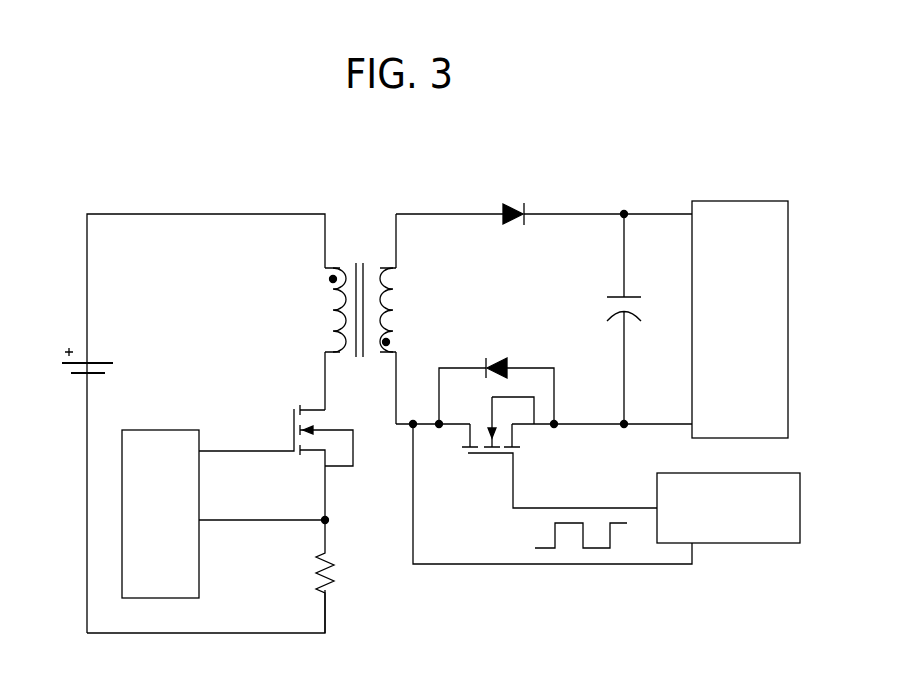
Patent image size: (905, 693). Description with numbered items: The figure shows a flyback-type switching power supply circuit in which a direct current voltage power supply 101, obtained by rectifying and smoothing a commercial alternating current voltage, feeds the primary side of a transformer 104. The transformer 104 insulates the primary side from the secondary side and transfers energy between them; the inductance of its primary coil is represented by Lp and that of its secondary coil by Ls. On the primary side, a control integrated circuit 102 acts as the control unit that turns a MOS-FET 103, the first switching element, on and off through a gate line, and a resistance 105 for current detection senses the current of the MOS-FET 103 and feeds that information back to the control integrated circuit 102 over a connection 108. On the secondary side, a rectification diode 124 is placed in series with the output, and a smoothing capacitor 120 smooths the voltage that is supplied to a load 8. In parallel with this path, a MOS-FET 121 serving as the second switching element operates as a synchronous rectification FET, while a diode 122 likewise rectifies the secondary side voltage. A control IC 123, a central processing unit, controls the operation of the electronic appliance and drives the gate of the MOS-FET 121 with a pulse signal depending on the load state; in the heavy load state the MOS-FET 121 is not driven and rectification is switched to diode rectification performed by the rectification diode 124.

The load 8 is at (738, 200).
The direct current voltage power supply 101 is at (78, 380).
The control integrated circuit 102 is at (163, 429).
The MOS-FET 103 is at (290, 410).
The transformer 104 is at (362, 286).
The resistance for current detection 105 is at (336, 577).
The signal line 108 is at (262, 505).
The smoothing capacitor 120 is at (606, 304).
The MOS-FET 121 is at (488, 460).
The diode 122 is at (489, 356).
The control IC (CPU) 123 is at (735, 546).
The rectification diode 124 is at (514, 200).
The inductance of primary coil Lp is at (333, 301).
The inductance of secondary coil Ls is at (388, 297).